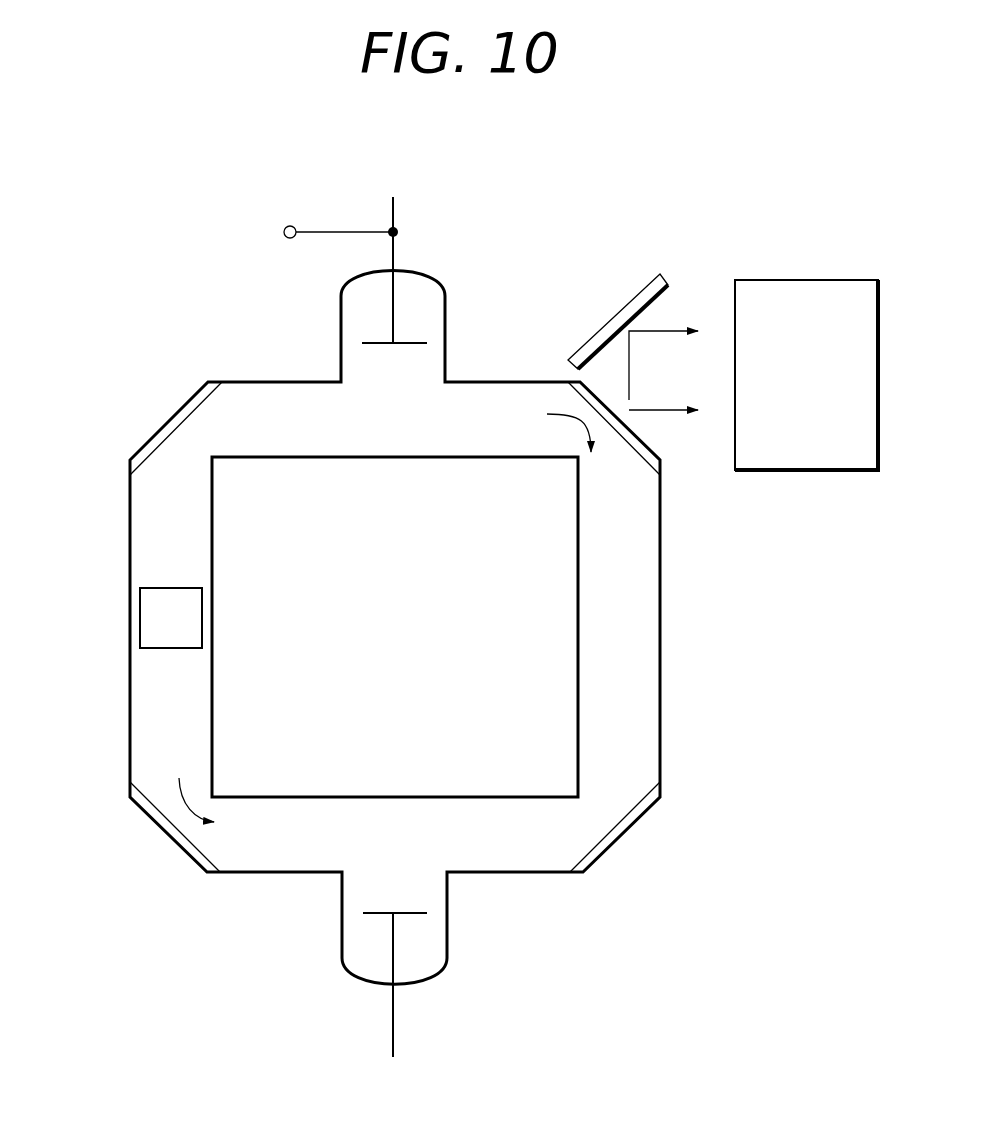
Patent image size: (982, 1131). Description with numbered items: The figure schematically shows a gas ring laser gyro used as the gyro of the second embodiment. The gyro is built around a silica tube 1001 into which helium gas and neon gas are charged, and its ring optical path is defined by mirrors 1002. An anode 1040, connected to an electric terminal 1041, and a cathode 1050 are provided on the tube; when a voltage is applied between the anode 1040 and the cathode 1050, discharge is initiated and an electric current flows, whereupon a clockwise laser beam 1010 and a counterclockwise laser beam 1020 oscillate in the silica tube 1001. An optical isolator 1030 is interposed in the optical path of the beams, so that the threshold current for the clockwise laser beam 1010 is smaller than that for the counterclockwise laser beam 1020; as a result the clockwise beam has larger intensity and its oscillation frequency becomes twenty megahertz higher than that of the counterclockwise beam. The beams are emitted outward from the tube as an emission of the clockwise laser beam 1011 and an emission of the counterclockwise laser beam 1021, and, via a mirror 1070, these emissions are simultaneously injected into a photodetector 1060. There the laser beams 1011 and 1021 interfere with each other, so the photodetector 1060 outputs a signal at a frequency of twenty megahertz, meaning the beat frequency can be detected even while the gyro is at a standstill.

The silica tube 1001 is at (295, 396).
The mirrors 1002 is at (657, 463).
The clockwise laser beam 1010 is at (560, 412).
The emission of a clockwise laser beam 1011 is at (678, 413).
The counterclockwise laser beam 1020 is at (180, 813).
The emission of a counterclockwise laser beam 1021 is at (678, 328).
The optical isolator 1030 is at (147, 618).
The anode 1040 is at (397, 252).
The electric terminal 1041 is at (290, 225).
The cathode 1050 is at (395, 1003).
The photodetector 1060 is at (832, 290).
The mirror 1070 is at (630, 307).